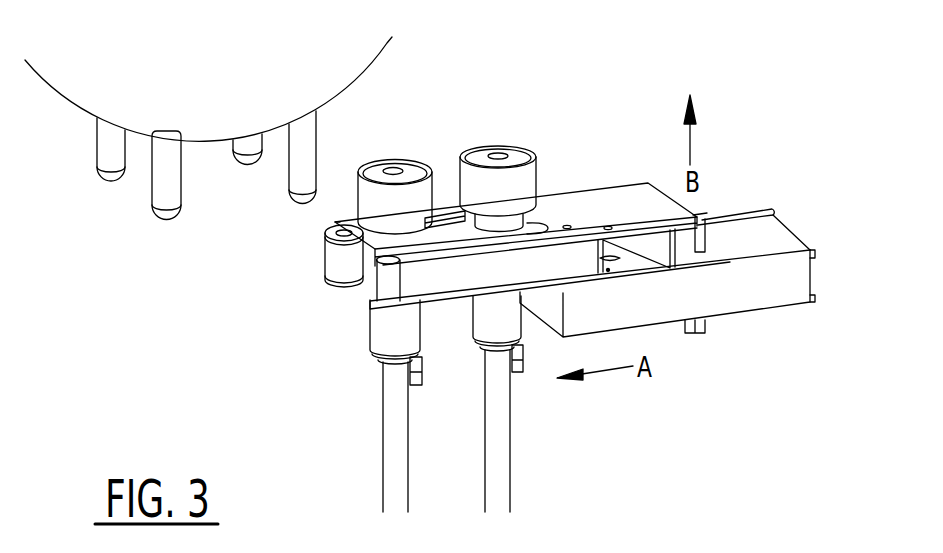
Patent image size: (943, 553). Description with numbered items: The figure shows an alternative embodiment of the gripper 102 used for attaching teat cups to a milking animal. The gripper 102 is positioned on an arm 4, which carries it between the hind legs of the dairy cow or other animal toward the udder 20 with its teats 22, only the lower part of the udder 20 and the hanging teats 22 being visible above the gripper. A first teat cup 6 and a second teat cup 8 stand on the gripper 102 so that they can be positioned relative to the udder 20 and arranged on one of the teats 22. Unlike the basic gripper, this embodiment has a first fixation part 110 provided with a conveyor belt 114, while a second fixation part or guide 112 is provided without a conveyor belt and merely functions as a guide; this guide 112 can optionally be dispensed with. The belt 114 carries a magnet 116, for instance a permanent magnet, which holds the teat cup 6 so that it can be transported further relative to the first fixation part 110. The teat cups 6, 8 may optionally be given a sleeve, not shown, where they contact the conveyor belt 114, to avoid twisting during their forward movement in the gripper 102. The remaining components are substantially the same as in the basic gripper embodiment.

The arm 4 is at (733, 290).
The first teat cup 6 is at (407, 173).
The second teat cup 8 is at (520, 163).
The udder 20 is at (330, 55).
The teats 22 is at (308, 137).
The gripper 102 is at (755, 110).
The first fixation part 110 is at (268, 240).
The second fixation part/guide 112 is at (402, 280).
The conveyor belt 114 is at (332, 260).
The magnet 116 is at (335, 196).